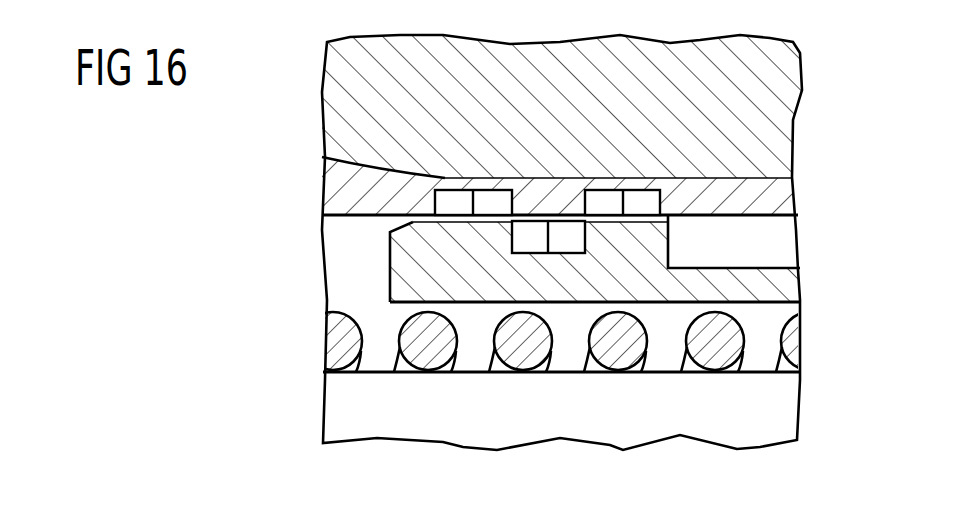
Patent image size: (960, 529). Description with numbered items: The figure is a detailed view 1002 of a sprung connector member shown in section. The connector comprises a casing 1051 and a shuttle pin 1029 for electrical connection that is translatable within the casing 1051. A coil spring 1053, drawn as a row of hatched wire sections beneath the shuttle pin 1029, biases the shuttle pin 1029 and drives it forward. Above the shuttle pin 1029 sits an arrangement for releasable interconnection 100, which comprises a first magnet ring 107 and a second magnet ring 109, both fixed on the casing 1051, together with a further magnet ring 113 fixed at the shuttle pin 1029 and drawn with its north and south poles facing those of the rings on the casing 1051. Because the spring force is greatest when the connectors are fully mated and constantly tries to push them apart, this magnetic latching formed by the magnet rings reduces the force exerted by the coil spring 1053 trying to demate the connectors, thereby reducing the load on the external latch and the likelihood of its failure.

The detailed view 1002 is at (842, 90).
The casing 1051 is at (342, 90).
The arrangement for releasable interconnection 100 is at (705, 158).
The first magnet ring 107 is at (443, 190).
The second magnet ring 109 is at (633, 190).
The third permanent magnet 113 is at (513, 240).
The shuttle pin 1029 is at (400, 261).
The coil spring 1053 is at (338, 332).